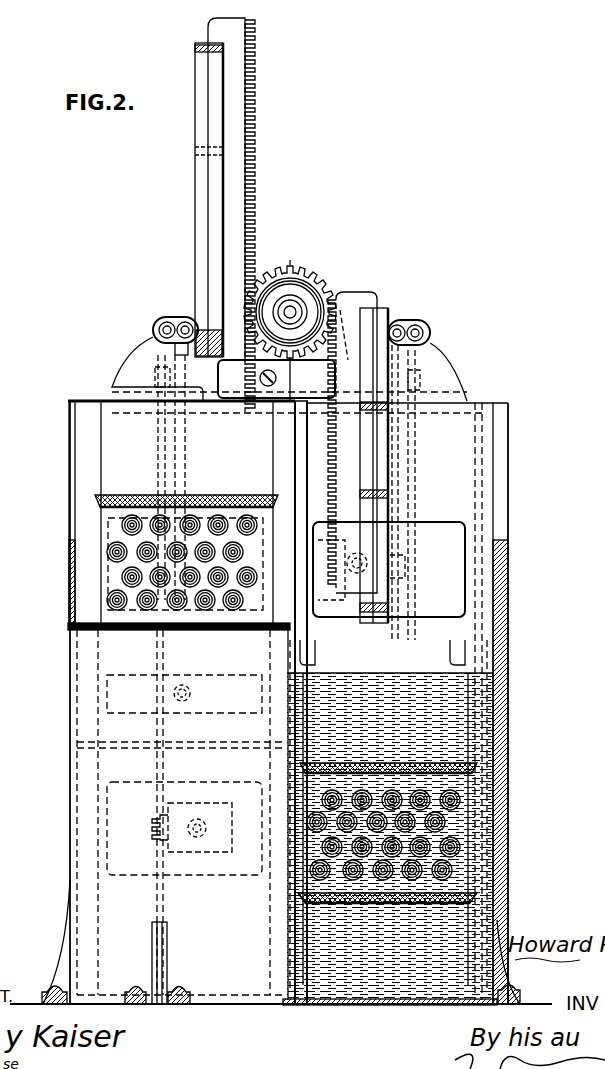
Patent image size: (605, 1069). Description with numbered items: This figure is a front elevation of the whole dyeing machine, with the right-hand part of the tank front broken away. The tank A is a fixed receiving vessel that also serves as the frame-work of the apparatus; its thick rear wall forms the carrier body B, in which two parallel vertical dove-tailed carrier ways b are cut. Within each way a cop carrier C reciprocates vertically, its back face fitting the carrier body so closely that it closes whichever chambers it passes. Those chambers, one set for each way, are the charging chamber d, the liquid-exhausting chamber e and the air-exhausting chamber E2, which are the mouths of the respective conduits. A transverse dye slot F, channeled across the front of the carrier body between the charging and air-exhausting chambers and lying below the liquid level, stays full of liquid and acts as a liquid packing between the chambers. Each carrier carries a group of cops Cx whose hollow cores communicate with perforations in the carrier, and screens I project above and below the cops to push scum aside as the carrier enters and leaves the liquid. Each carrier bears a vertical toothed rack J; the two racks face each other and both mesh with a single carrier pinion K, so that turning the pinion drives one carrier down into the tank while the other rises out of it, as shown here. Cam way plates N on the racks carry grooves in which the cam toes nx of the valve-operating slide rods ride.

The tank A is at (480, 752).
The carrier body B is at (523, 448).
The cop carrier C is at (432, 674).
The dye slot F is at (493, 758).
The screen I is at (128, 495).
The cop Cx is at (255, 532).
The liquid-exhausting chamber e is at (100, 572).
The air-exhausting chamber E2 is at (184, 694).
The charging chamber d is at (184, 828).
The carrier way b is at (273, 470).
The toothed rack J is at (253, 161).
The cam way plate N is at (200, 192).
The carrier pinion K is at (277, 323).
The cam toe nx is at (165, 317).